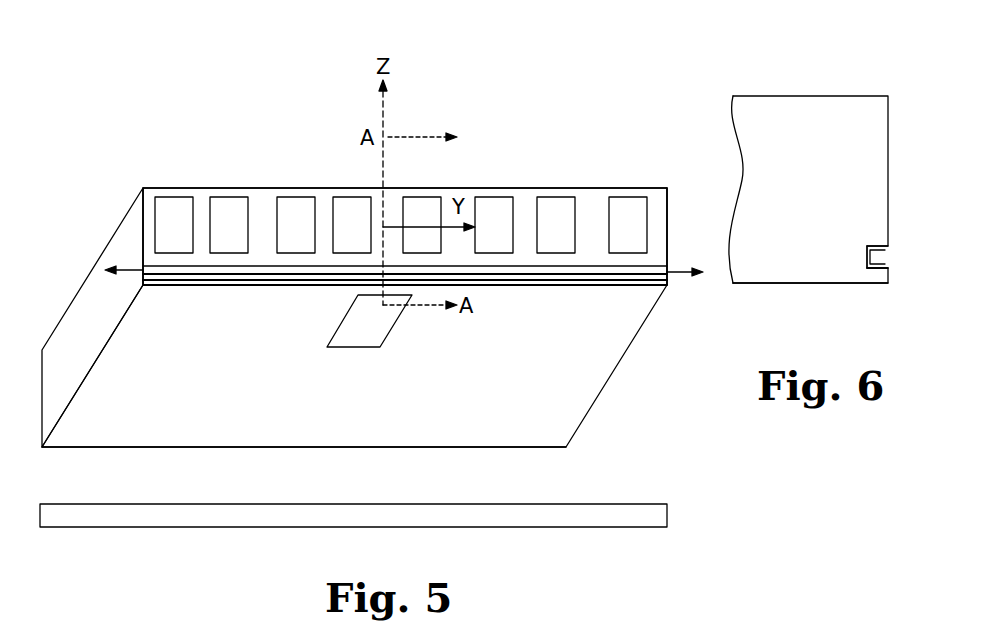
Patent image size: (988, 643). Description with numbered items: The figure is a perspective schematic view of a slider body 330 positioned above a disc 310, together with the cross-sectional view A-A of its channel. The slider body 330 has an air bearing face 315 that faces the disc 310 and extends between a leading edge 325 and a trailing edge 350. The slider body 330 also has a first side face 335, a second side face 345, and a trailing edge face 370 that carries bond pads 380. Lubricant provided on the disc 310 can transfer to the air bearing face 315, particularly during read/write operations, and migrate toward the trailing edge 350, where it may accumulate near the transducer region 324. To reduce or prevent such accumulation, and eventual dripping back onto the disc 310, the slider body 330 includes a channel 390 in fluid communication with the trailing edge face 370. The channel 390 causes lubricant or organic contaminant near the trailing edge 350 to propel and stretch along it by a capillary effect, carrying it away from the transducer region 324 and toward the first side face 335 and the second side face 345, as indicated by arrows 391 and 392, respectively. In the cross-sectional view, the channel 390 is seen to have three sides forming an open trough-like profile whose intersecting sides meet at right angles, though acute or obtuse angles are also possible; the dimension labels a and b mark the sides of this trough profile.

In FIG. 5, the disc 310 is at (530, 528).
In FIG. 5, the air bearing face 315 is at (354, 366).
In FIG. 6, the air bearing face 315 is at (758, 284).
In FIG. 5, the transducer region 324 is at (339, 332).
In FIG. 5, the leading edge 325 is at (530, 448).
In FIG. 5, the slider body 330 is at (534, 96).
In FIG. 5, the first side face 335 is at (92, 317).
In FIG. 5, the second side face 345 is at (670, 200).
In FIG. 5, the trailing edge 350 is at (668, 287).
In FIG. 5, the trailing edge face 370 is at (593, 202).
In FIG. 6, the trailing edge face 370 is at (888, 98).
In FIG. 5, the bond pads 380 is at (297, 204).
In FIG. 5, the channel 390 is at (628, 289).
In FIG. 6, the channel 390 is at (856, 276).
In FIG. 5, the arrow 391 is at (135, 268).
In FIG. 5, the arrow 392 is at (668, 272).
In FIG. 6, the slot arm dimension a is at (882, 246).
In FIG. 6, the slot depth dimension b is at (862, 256).